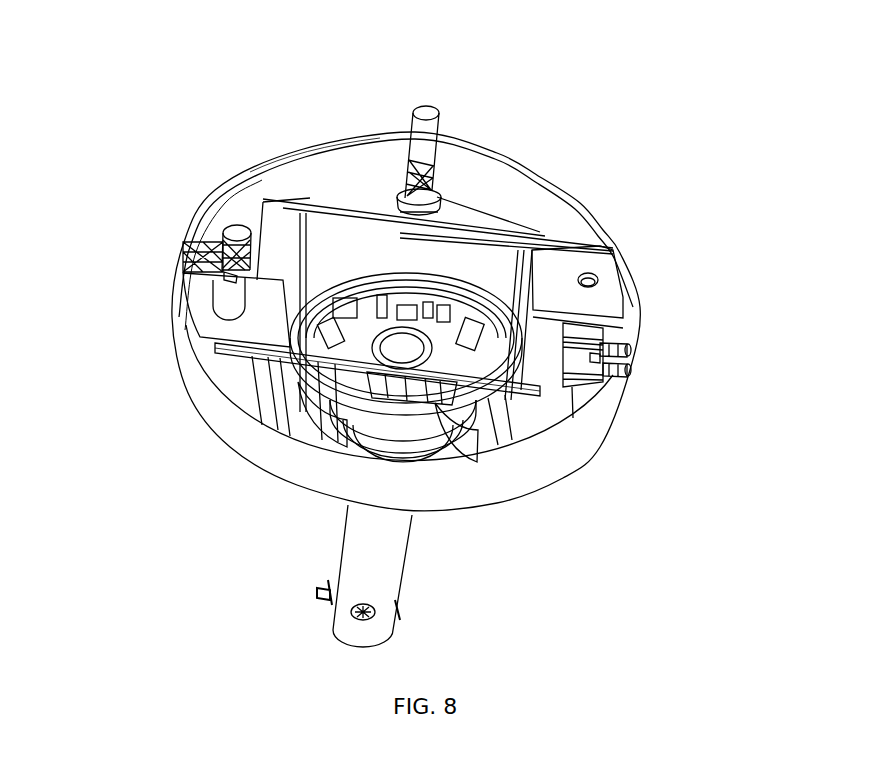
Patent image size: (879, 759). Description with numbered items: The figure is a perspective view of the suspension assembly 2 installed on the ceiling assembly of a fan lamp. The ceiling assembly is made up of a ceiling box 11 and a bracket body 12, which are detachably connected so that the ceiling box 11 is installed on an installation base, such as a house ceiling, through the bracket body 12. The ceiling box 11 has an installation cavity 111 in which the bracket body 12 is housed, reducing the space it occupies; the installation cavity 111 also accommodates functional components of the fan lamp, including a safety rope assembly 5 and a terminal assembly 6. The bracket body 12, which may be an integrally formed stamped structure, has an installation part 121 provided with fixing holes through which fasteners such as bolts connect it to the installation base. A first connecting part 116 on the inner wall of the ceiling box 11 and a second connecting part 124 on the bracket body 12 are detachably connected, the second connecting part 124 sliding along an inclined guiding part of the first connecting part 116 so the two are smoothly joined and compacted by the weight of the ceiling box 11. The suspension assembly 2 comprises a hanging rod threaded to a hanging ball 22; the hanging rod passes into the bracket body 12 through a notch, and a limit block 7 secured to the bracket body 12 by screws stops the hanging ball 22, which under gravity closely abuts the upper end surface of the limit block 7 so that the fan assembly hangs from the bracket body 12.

The suspension assembly 2 is at (368, 543).
The safety rope assembly 5 is at (420, 137).
The terminal assembly 6 is at (243, 367).
The limit block 7 is at (307, 407).
The ceiling box 11 is at (543, 200).
The bracket body 12 is at (592, 303).
The hanging ball 22 is at (470, 452).
The installation cavity 111 is at (305, 175).
The first connecting part 116 is at (632, 352).
The installation part 121 is at (282, 232).
The second connecting part 124 is at (608, 378).